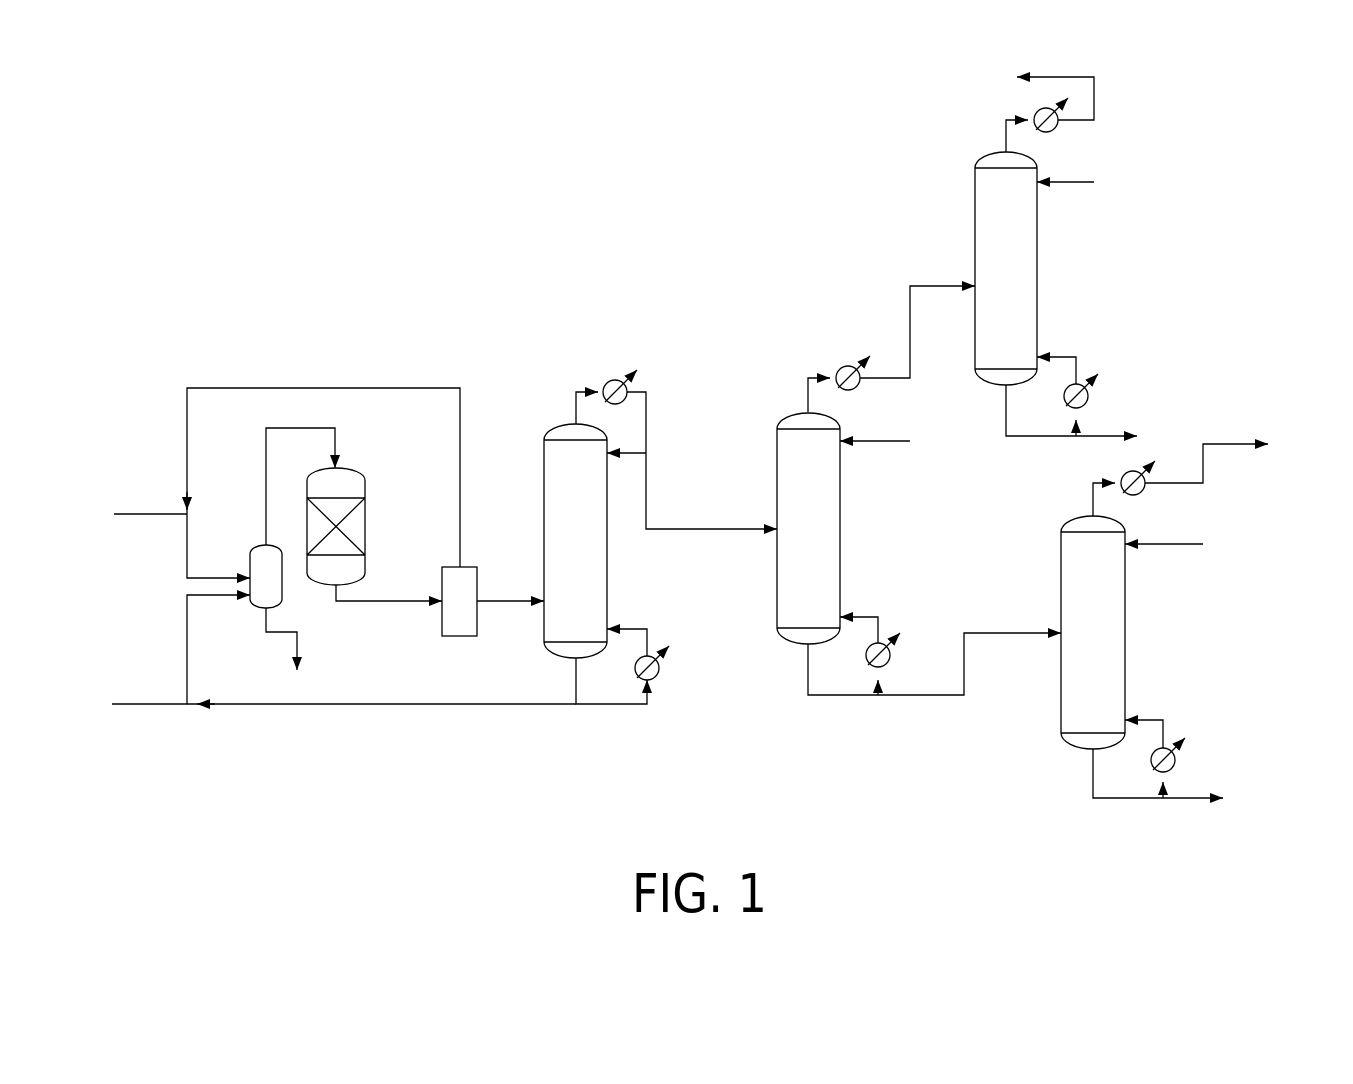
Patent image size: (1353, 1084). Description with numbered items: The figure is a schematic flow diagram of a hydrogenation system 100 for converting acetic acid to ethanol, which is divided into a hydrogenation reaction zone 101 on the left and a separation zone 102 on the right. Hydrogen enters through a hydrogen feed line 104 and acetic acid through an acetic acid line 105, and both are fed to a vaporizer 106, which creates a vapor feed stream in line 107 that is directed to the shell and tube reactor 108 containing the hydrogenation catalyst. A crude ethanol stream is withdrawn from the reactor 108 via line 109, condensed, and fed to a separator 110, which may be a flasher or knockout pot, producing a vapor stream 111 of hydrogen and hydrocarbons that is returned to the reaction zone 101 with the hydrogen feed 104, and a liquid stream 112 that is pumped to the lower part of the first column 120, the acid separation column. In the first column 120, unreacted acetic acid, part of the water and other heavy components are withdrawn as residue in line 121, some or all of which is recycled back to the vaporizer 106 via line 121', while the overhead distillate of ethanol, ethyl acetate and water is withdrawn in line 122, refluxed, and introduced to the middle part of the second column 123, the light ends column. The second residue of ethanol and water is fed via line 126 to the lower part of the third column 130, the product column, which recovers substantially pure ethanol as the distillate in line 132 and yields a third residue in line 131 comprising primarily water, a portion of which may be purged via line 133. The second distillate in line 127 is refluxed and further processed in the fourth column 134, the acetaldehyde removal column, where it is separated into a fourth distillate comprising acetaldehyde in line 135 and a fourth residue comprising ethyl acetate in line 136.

The hydrogenation system 100 is at (275, 230).
The hydrogenation reaction zone 101 is at (287, 753).
The separation zone 102 is at (1148, 357).
The hydrogen feed line 104 is at (157, 516).
The acetic acid line 105 is at (153, 705).
The vaporizer 106 is at (260, 562).
The vapor feed stream line 107 is at (305, 427).
The reactor 108 is at (347, 483).
The crude ethanol stream line 109 is at (368, 603).
The separator 110 is at (468, 587).
The vapor stream 111 is at (435, 387).
The liquid stream 112 is at (502, 603).
The first column 120 is at (553, 462).
The first residue line 121 is at (601, 699).
The residue recycle line 121' is at (381, 744).
The first distillate line 122 is at (640, 387).
The second column 123 is at (818, 517).
The second residue line 126 is at (828, 697).
The second distillate line 127 is at (887, 378).
The third column 130 is at (1117, 624).
The third residue line 131 is at (1093, 774).
The third distillate line 132 is at (1203, 508).
The purge line 133 is at (1187, 800).
The fourth column 134 is at (1027, 253).
The fourth distillate line 135 is at (1094, 100).
The fourth residue line 136 is at (1047, 440).